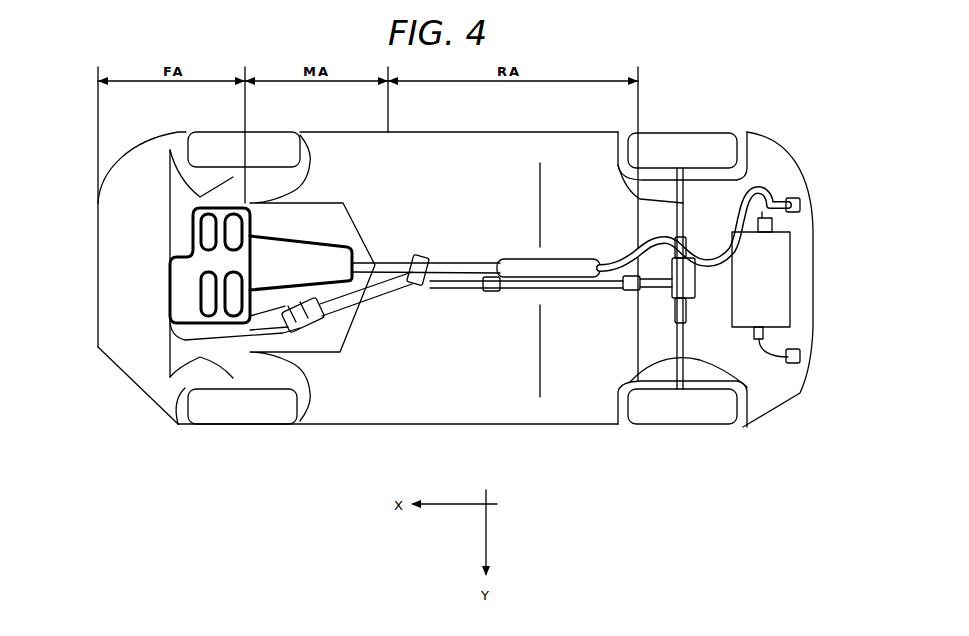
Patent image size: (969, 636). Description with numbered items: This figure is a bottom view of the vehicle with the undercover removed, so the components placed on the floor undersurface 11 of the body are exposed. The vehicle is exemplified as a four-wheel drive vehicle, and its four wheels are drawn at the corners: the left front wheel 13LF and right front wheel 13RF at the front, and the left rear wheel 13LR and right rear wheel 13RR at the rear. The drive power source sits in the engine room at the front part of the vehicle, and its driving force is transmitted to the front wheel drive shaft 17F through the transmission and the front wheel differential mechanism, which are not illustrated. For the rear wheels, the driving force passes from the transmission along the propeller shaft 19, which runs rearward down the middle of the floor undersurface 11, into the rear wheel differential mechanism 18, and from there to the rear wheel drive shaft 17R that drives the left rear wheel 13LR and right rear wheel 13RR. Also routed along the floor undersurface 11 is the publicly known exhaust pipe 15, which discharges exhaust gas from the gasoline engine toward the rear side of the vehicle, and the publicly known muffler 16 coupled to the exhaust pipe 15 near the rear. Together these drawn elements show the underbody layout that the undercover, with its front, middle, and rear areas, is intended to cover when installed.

The floor undersurface 11 is at (98, 265).
The left front wheel 13LF is at (287, 139).
The right front wheel 13RF is at (237, 410).
The left rear wheel 13LR is at (683, 153).
The right rear wheel 13RR is at (690, 410).
The exhaust pipe 15 is at (753, 187).
The muffler 16 is at (760, 270).
The front wheel drive shaft 17F is at (233, 185).
The rear wheel drive shaft 17R is at (640, 199).
The rear wheel differential mechanism 18 is at (677, 287).
The propeller shaft 19 is at (550, 283).